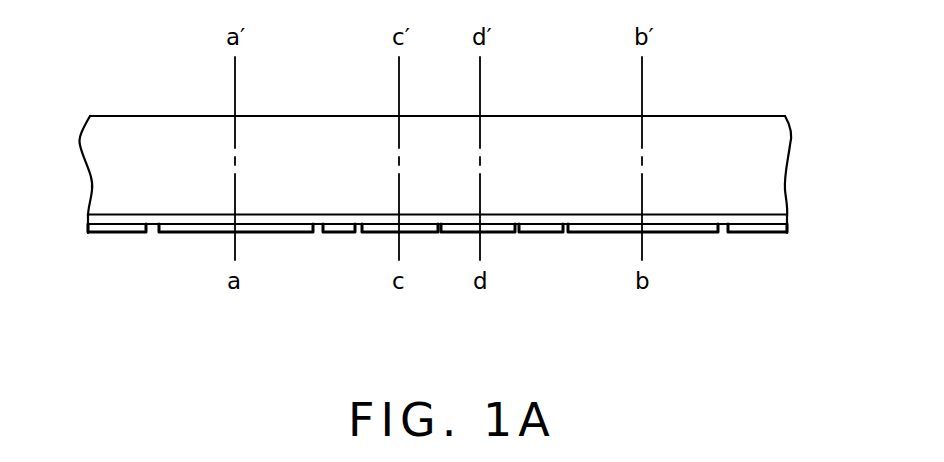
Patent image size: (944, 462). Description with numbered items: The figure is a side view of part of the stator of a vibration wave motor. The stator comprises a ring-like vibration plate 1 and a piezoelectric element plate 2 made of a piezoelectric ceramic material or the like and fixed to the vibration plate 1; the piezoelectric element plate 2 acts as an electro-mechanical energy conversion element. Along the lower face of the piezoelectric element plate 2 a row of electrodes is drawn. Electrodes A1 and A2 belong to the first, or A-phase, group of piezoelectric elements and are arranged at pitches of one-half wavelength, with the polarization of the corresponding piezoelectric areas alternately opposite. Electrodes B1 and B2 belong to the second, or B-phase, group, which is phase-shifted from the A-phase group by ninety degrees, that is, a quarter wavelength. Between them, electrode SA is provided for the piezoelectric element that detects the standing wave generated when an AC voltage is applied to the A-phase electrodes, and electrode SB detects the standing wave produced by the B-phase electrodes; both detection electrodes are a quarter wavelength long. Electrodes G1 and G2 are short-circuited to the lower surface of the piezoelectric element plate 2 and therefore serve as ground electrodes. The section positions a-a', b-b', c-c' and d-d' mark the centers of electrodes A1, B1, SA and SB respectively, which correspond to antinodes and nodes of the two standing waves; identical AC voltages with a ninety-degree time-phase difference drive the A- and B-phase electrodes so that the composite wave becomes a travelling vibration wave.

The vibration plate 1 is at (788, 172).
The piezoelectric element plate 2 is at (788, 221).
The A-phase electrode A2 is at (115, 233).
The A-phase electrode A1 is at (193, 233).
The ground electrode G1 is at (333, 233).
The vibration detection electrode SA is at (418, 233).
The vibration detection electrode SB is at (495, 233).
The ground electrode G2 is at (545, 233).
The B-phase electrode B1 is at (670, 233).
The B-phase electrode B2 is at (757, 233).